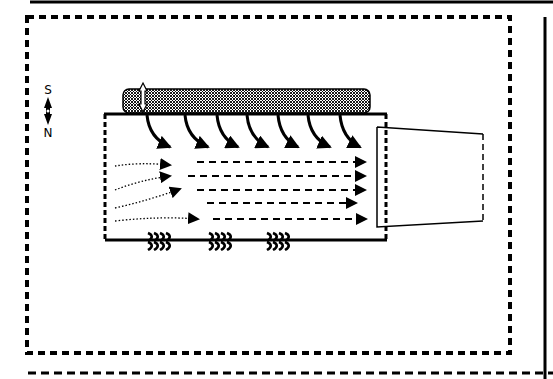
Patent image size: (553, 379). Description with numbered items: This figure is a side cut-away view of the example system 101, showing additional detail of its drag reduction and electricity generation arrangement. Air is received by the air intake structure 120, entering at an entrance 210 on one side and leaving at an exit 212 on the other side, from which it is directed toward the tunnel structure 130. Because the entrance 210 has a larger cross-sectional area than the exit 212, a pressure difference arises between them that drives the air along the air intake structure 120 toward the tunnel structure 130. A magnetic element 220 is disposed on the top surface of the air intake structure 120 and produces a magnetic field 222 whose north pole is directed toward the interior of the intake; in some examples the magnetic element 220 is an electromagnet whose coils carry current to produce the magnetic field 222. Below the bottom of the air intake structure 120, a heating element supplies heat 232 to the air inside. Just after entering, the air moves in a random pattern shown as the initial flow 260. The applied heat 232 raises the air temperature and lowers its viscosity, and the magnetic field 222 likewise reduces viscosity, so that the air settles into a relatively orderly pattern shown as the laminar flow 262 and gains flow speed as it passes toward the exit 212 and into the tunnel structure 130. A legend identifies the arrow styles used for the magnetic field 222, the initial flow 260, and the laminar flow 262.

The system 101 is at (490, 55).
The air intake structure 120 is at (398, 81).
The magnetic element 220 is at (323, 109).
The tunnel structure 130 is at (457, 170).
The entrance 210 is at (105, 220).
The exit 212 is at (385, 231).
The heat 232 is at (264, 254).
The magnetic field 222 is at (42, 309).
The initial flow 260 is at (42, 337).
The laminar flow 262 is at (240, 336).